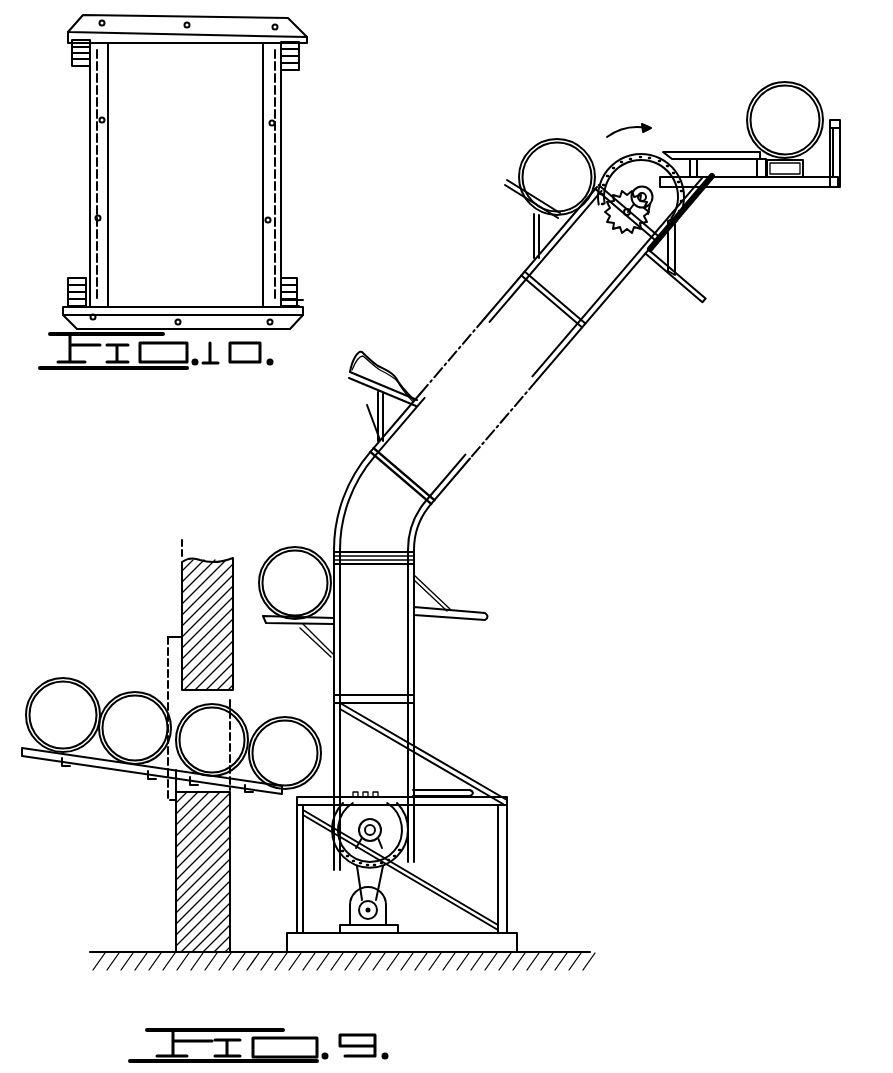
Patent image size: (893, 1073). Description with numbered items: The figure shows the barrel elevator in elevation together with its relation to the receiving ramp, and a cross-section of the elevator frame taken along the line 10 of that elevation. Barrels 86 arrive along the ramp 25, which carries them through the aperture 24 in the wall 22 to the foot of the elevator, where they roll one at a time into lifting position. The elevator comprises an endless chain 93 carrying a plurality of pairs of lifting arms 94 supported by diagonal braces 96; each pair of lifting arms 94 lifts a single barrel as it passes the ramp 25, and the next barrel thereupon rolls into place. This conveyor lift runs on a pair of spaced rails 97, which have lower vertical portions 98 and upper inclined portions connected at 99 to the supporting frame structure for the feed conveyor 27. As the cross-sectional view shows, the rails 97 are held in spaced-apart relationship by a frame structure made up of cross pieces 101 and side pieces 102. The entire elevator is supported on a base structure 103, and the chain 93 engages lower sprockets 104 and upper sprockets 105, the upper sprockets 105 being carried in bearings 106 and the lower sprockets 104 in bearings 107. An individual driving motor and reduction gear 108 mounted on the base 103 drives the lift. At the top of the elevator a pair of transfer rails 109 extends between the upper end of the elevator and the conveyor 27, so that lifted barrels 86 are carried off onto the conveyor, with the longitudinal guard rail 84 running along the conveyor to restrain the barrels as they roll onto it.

In FIG. 9, the section line 10 is at (372, 413).
In FIG. 9, the wall 22 is at (190, 596).
In FIG. 9, the aperture 24 is at (229, 695).
In FIG. 9, the ramp 25 is at (120, 770).
In FIG. 9, the conveyor 27 is at (790, 172).
In FIG. 9, the longitudinal guard rail 84 is at (832, 122).
In FIG. 9, the barrel 86 is at (62, 683).
In FIG. 10, the endless chain 93 is at (287, 297).
In FIG. 9, the endless chain 93 is at (644, 156).
In FIG. 9, the lifting arm 94 is at (692, 284).
In FIG. 9, the diagonal brace 96 is at (677, 243).
In FIG. 10, the rail 97 is at (85, 52).
In FIG. 9, the rail 97 is at (502, 297).
In FIG. 9, the lower vertical portion 98 is at (416, 675).
In FIG. 9, the connection 99 is at (706, 188).
In FIG. 10, the cross piece 101 is at (102, 175).
In FIG. 10, the side piece 102 is at (230, 28).
In FIG. 9, the base structure 103 is at (508, 852).
In FIG. 9, the lower sprocket 104 is at (398, 834).
In FIG. 9, the upper sprocket 105 is at (686, 209).
In FIG. 9, the bearing 106 is at (621, 229).
In FIG. 9, the bearing 107 is at (376, 820).
In FIG. 9, the driving motor and reduction gear 108 is at (388, 908).
In FIG. 9, the rail 109 is at (727, 141).